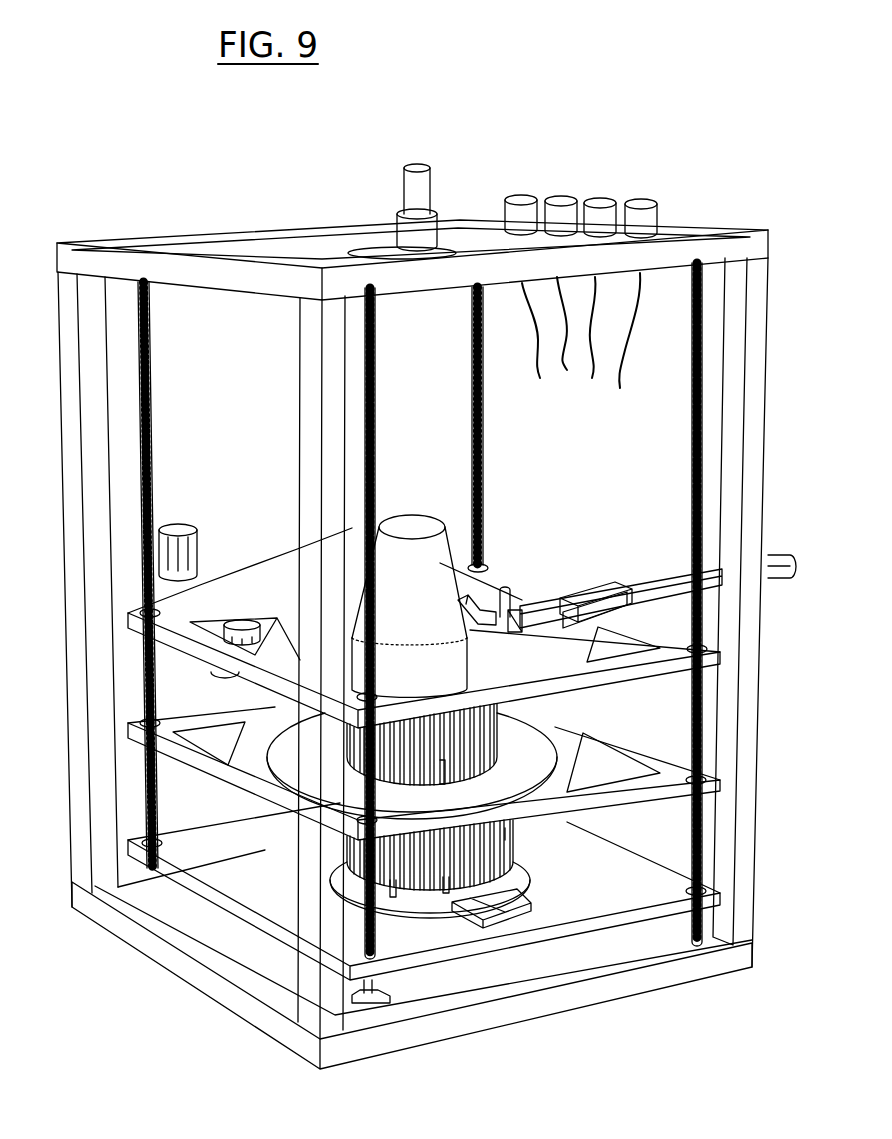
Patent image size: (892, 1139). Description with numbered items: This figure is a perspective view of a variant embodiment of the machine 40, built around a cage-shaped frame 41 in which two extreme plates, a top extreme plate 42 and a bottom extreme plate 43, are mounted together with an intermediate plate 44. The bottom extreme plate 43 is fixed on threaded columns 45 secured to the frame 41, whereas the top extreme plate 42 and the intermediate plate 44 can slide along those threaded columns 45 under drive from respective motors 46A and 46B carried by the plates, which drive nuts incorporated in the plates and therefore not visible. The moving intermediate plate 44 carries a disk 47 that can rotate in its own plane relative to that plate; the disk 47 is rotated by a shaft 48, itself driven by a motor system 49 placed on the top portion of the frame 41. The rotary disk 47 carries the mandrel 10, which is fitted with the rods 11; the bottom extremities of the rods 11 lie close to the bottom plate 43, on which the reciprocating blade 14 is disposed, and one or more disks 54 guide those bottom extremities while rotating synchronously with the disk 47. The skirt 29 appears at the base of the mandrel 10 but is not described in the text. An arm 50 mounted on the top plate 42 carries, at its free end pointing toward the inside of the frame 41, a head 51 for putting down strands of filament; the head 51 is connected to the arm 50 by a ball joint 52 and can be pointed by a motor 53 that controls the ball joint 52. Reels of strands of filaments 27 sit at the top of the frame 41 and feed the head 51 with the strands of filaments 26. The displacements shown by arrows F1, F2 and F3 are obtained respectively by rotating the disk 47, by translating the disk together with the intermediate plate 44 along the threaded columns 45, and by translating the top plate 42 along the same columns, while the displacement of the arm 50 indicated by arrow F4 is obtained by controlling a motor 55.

The mandrel 10 is at (432, 520).
The rods 11 is at (468, 722).
The reciprocating blade 14 is at (488, 902).
The strands of filaments 26 is at (622, 375).
The reels of strands of filaments 27 is at (604, 208).
The cylindrical skirt 29 is at (403, 668).
The variant embodiment of the machine 40 is at (777, 295).
The cage-shaped frame 41 is at (745, 810).
The top extreme plate 42 is at (545, 590).
The bottom extreme plate 43 is at (603, 910).
The intermediate plate 44 is at (627, 795).
The threaded columns 45 is at (148, 380).
The motor 46A is at (183, 526).
The motor 46B is at (243, 620).
The disk 47 is at (432, 790).
The shaft 48 is at (376, 425).
The motor system 49 is at (412, 196).
The arm 50 is at (655, 585).
The head 51 is at (480, 630).
The ball joint 52 is at (521, 632).
The motor 53 is at (506, 590).
The disks 54 is at (508, 835).
The motor 55 is at (766, 578).
The arrow F1 is at (524, 757).
The arrow F2 is at (667, 697).
The arrow F3 is at (770, 627).
The arrow F4 is at (805, 538).